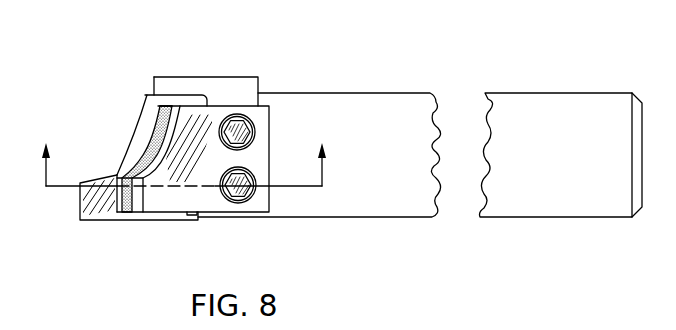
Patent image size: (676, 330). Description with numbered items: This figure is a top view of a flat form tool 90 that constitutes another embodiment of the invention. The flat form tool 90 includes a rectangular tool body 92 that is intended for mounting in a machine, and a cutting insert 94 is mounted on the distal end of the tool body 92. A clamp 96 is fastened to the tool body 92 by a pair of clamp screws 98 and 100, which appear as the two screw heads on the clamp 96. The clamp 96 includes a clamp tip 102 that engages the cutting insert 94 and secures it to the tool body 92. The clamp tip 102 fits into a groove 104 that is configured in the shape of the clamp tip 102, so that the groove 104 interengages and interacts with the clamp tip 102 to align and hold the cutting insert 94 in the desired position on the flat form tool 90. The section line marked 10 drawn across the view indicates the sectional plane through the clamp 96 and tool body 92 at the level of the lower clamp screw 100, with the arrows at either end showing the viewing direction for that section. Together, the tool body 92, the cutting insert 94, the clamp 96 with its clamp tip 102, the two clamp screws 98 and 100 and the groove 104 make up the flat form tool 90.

The section line 10- 10 is at (182, 170).
The flat form tool 90 is at (247, 56).
The tool body 92 is at (350, 107).
The cutting insert 94 is at (137, 118).
The clamp 96 is at (258, 202).
The clamp screw 98 is at (257, 132).
The clamp screw 100 is at (257, 189).
The clamp tip 102 is at (122, 199).
The groove 104 is at (130, 168).